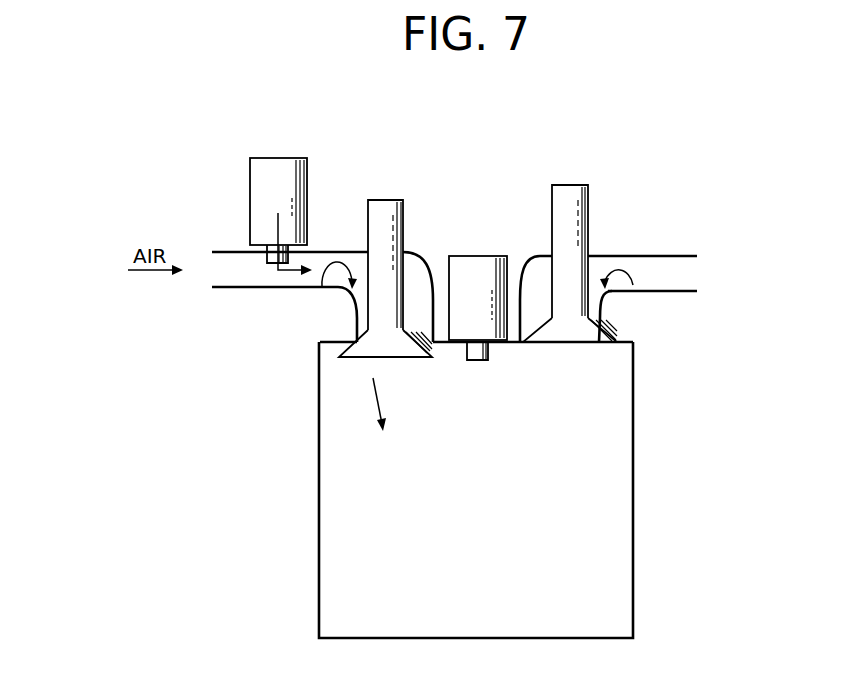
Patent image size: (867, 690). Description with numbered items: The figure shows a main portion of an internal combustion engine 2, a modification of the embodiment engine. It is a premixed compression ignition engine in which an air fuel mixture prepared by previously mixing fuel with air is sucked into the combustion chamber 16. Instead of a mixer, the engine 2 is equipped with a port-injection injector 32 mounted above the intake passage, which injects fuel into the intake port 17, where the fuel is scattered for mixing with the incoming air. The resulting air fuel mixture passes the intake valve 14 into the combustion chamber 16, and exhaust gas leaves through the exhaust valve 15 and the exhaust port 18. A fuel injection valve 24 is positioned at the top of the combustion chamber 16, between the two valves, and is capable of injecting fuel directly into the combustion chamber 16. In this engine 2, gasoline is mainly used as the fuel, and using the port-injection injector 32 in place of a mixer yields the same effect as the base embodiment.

The internal combustion engine 2 is at (517, 142).
The intake valve 14 is at (385, 205).
The exhaust valve 15 is at (568, 193).
The combustion chamber 16 is at (488, 513).
The intake port 17 is at (322, 286).
The exhaust port 18 is at (633, 285).
The fuel injection valve 24 is at (477, 267).
The port-injection injector 32 is at (278, 163).